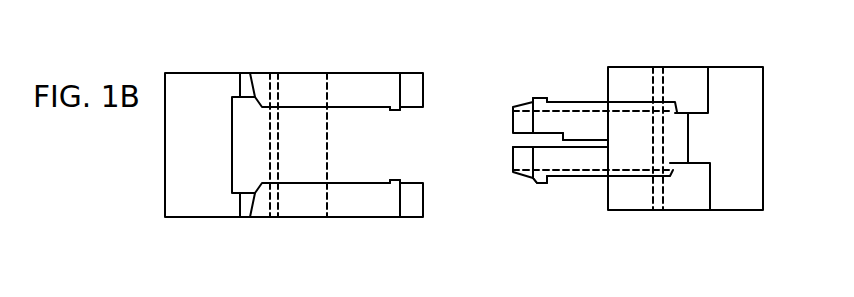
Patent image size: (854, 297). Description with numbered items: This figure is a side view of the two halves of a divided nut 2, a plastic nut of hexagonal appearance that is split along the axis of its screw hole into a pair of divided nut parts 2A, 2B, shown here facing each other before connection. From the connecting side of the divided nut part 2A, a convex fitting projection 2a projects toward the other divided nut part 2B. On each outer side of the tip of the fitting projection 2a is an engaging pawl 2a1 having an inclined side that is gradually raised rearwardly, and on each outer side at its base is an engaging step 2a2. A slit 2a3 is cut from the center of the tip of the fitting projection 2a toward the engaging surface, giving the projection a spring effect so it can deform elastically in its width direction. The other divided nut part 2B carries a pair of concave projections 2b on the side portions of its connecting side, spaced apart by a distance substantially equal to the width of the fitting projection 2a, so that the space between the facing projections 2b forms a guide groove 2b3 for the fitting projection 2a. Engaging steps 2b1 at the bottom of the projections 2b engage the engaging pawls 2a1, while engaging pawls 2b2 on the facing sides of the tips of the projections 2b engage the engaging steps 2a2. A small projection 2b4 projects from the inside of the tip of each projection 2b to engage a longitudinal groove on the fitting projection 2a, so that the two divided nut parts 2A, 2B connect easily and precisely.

The divided nut 2 is at (464, 155).
The divided nut part 2A is at (631, 139).
The divided nut part 2B is at (324, 144).
The fitting projection 2a is at (572, 158).
The engaging pawl 2a1 is at (538, 99).
The engaging step 2a2 is at (677, 110).
The slit 2a3 is at (563, 136).
The projection 2b is at (345, 73).
The engaging step 2b1 is at (233, 75).
The engaging pawl 2b2 is at (412, 92).
The guide groove 2b3 is at (358, 152).
The small projection 2b4 is at (410, 108).